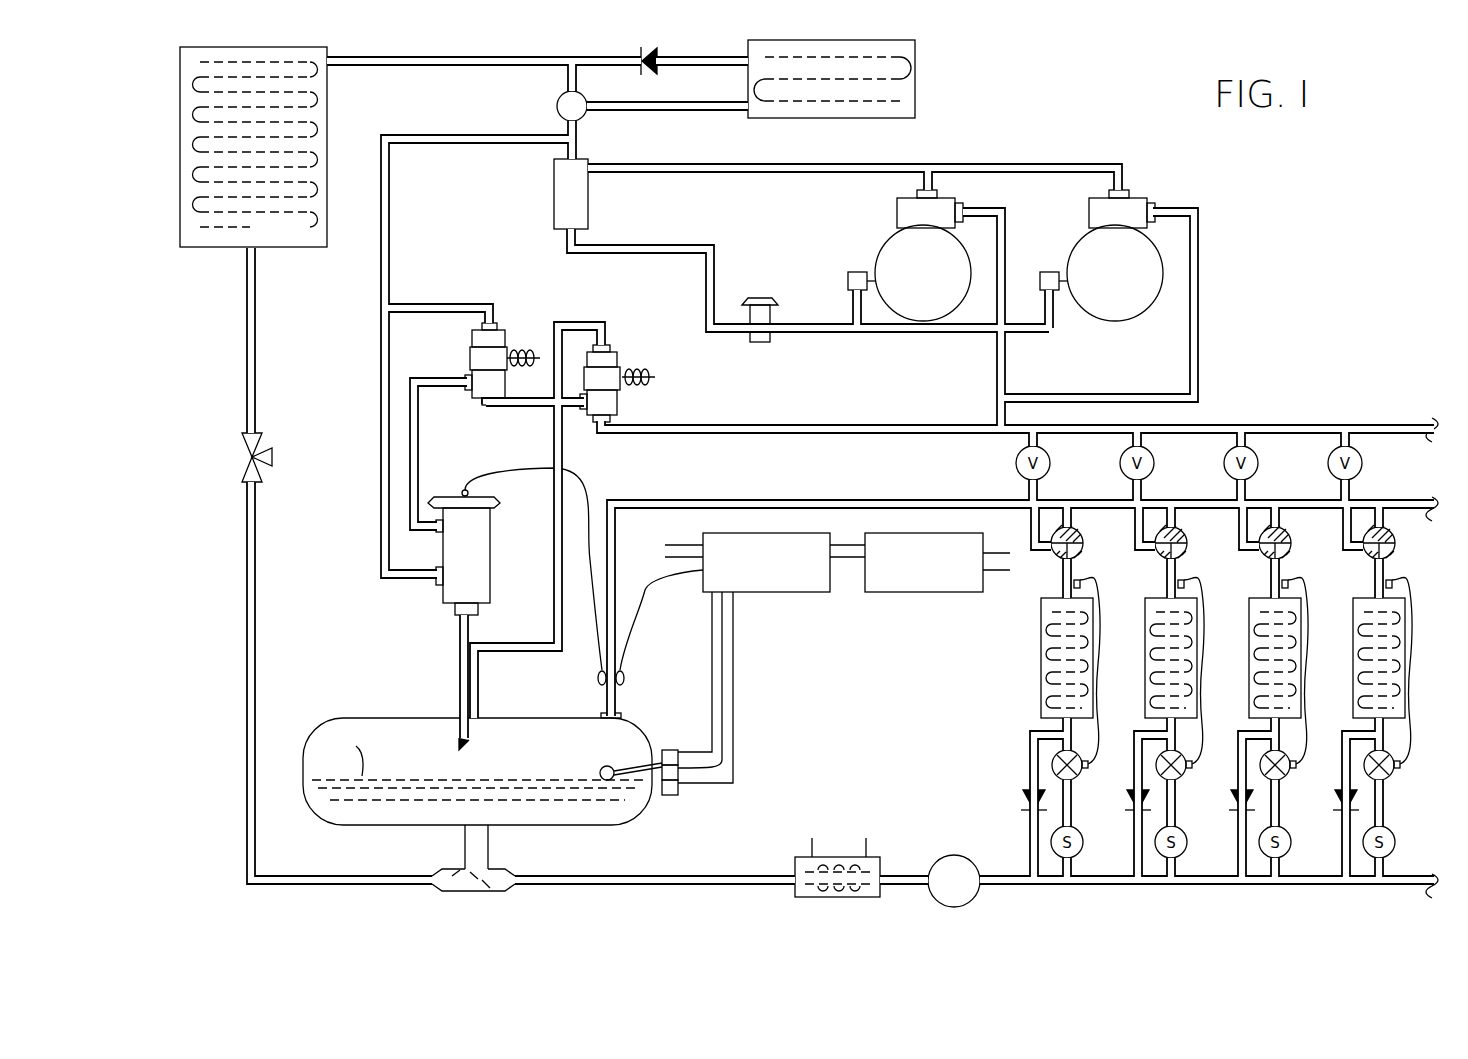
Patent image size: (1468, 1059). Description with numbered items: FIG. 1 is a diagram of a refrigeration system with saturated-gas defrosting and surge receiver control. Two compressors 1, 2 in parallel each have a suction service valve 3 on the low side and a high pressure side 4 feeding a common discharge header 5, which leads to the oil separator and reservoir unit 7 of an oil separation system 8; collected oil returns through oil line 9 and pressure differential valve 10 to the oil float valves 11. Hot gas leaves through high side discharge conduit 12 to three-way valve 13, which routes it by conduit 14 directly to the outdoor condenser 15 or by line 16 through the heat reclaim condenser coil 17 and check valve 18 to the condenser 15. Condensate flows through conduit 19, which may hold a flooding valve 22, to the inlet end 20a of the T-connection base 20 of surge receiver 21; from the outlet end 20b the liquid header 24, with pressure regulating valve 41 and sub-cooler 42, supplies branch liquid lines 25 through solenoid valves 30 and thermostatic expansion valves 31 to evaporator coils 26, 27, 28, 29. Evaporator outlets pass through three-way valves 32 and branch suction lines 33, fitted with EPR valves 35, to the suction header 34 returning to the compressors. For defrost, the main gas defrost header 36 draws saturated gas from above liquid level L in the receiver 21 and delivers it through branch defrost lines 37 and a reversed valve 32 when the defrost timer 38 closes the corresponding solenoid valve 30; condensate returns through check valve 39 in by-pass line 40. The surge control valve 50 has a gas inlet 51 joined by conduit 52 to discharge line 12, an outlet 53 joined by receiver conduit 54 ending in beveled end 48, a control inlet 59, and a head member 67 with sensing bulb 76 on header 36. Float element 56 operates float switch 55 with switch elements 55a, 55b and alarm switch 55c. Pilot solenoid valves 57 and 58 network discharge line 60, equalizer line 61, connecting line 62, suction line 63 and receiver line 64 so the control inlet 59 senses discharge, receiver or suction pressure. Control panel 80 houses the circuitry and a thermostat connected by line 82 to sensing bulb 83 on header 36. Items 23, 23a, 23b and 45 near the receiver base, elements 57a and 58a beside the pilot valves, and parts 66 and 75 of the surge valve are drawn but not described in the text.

The compressor 1 is at (882, 245).
The compressor 2 is at (1073, 249).
The suction service valve 3 is at (966, 202).
The discharge side 4 is at (934, 178).
The common discharge header 5 is at (806, 164).
The oil separator and reservoir unit 7 is at (590, 201).
The oil separation system 8 is at (736, 252).
The oil line 9 is at (693, 240).
The pressure differential valve 10 is at (764, 302).
The oil float valve 11 is at (846, 284).
The high side discharge conduit 12 is at (581, 136).
The three-way valve 13 is at (556, 104).
The conduit 14 is at (432, 58).
The outdoor condenser 15 is at (328, 94).
The line 16 is at (648, 111).
The heat reclaim condenser coil 17 is at (920, 62).
The one-way check valve 18 is at (644, 60).
The conduit 19 is at (257, 605).
The T-connection base 20 is at (432, 871).
The inlet end 20a is at (432, 888).
The outlet end 20b is at (512, 871).
The surge-type receiver 21 is at (368, 718).
The pressure responsive flooding valve 22 is at (262, 444).
The tank outlet pipe 23 is at (490, 836).
The outlet pipe portion 23a is at (490, 888).
The outlet pipe portion 23b is at (458, 884).
The liquid header 24 is at (746, 882).
The branch liquid line 25 is at (1074, 870).
The evaporator coil 26 is at (1041, 597).
The evaporator coil 27 is at (1145, 597).
The evaporator coil 28 is at (1249, 597).
The evaporator coil 29 is at (1353, 597).
The solenoid valve 30 is at (1082, 836).
The thermostatic expansion valve 31 is at (1084, 769).
The three-way valve 32 is at (1083, 552).
The branch suction line 33 is at (1028, 487).
The suction header 34 is at (1128, 390).
The evaporator pressure regulator valve 35 is at (1008, 459).
The main gas defrost header 36 is at (844, 499).
The branch defrost line 37 is at (1074, 521).
The defrost timer 38 is at (950, 592).
The check valve 39 is at (1024, 800).
The by-pass line 40 is at (1028, 732).
The pressure regulating valve 41 is at (954, 854).
The evaporative sub-cooler 42 is at (881, 858).
The tee fitting 45 is at (513, 889).
The beveled end 48 is at (460, 745).
The surge control valve 50 is at (443, 594).
The gas inlet 51 is at (434, 580).
The conduit 52 is at (391, 206).
The gas outlet 53 is at (454, 614).
The receiver conduit 54 is at (458, 686).
The float switch 55 is at (669, 796).
The first switch element 55a is at (700, 724).
The second switch element 55b is at (735, 770).
The third switch 55c is at (682, 788).
The float element 56 is at (602, 767).
The pilot solenoid valve 57 is at (504, 335).
The solenoid coil 57a is at (522, 346).
The pilot solenoid valve 58 is at (616, 355).
The solenoid coil 58a is at (640, 360).
The control inlet 59 is at (438, 530).
The discharge pressure connecting line 60 is at (413, 305).
The equalizer line 61 is at (419, 415).
The connecting line 62 is at (523, 408).
The suction pressure connecting line 63 is at (802, 424).
The receiver pressure connecting line 64 is at (563, 453).
The valve body 66 is at (490, 545).
The head member 67 is at (496, 501).
The float linkage 75 is at (584, 496).
The sensing bulb 76 is at (598, 678).
The surge control panel 80 is at (809, 592).
The line 82 is at (654, 588).
The sensing bulb 83 is at (623, 678).